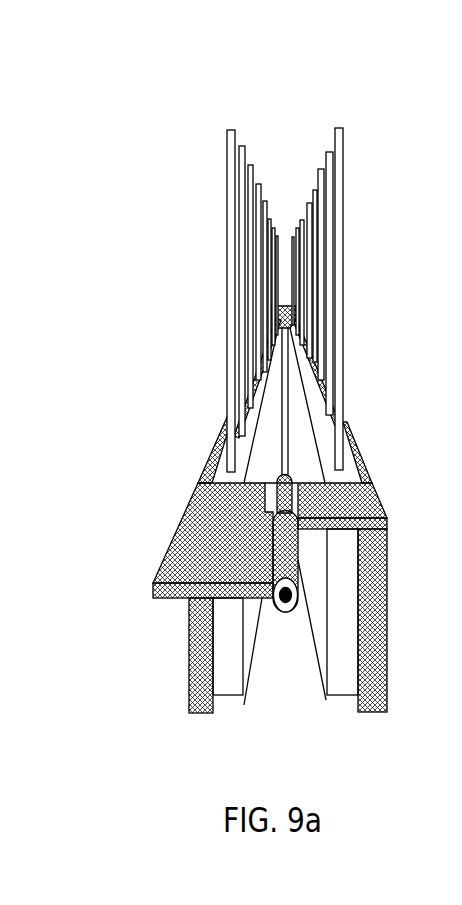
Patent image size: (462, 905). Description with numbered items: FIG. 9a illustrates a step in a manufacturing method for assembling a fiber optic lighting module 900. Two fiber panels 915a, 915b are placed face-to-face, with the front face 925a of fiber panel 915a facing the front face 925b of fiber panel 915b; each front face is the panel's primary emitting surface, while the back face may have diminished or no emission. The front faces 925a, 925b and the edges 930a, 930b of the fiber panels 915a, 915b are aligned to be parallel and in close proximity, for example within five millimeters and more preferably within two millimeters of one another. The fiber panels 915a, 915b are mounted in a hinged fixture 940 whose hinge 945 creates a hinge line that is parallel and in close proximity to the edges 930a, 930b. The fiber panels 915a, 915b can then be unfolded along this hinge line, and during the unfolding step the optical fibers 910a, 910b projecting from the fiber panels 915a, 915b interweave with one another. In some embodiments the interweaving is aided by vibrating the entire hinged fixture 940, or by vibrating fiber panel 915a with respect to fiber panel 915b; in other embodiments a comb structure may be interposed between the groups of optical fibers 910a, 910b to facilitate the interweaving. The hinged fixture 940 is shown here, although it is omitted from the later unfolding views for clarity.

The fiber optic lighting module 900 is at (277, 409).
The optical fibers 910a is at (223, 233).
The optical fibers 910b is at (347, 270).
The hinge 945 is at (282, 328).
The edge 930a is at (222, 472).
The edge 930b is at (352, 453).
The hinged fixture 940 is at (358, 498).
The front face 925a is at (250, 615).
The front face 925b is at (320, 617).
The fiber panel 915a is at (232, 695).
The fiber panel 915b is at (332, 697).